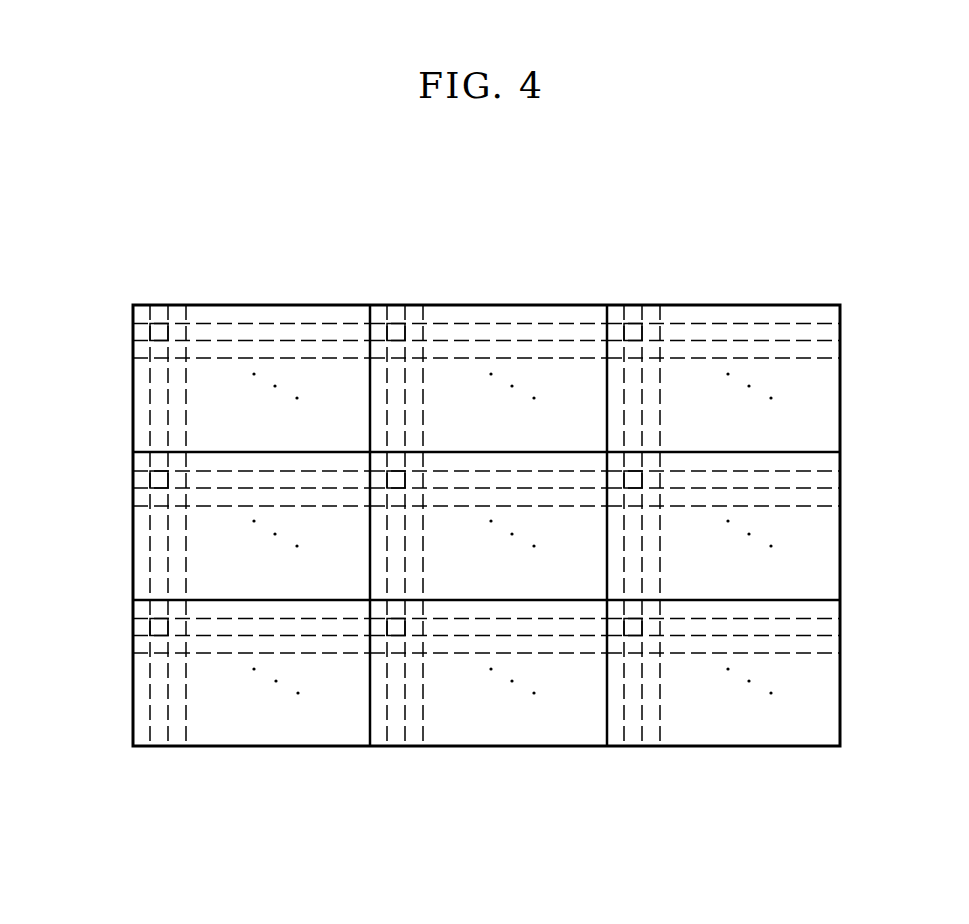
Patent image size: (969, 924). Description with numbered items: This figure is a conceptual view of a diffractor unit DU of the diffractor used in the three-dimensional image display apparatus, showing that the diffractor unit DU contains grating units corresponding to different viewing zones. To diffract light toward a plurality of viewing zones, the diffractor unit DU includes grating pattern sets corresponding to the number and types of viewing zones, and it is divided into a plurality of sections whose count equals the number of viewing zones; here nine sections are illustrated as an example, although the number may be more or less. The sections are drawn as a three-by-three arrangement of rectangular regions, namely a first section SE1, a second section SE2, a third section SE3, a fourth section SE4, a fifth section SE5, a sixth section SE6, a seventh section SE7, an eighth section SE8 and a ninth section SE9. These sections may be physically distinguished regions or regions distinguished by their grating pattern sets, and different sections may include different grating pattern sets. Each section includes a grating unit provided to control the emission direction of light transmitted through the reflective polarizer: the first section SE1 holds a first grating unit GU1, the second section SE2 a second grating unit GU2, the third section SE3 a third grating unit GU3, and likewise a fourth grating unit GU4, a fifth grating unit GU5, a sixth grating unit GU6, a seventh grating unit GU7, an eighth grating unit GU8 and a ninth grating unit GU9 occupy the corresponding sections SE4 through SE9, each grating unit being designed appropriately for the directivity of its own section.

The diffractor unit DU is at (121, 295).
The first grating unit GU1 is at (143, 304).
The second grating unit GU2 is at (398, 307).
The third grating unit GU3 is at (648, 308).
The fourth grating unit GU4 is at (140, 480).
The fifth grating unit GU5 is at (396, 480).
The sixth grating unit GU6 is at (652, 480).
The seventh grating unit GU7 is at (142, 647).
The eighth grating unit GU8 is at (395, 648).
The ninth grating unit GU9 is at (650, 648).
The first section SE1 is at (301, 439).
The second section SE2 is at (538, 439).
The third section SE3 is at (774, 439).
The fourth section SE4 is at (301, 587).
The fifth section SE5 is at (538, 587).
The sixth section SE6 is at (774, 587).
The seventh section SE7 is at (301, 735).
The eighth section SE8 is at (538, 735).
The ninth section SE9 is at (774, 735).